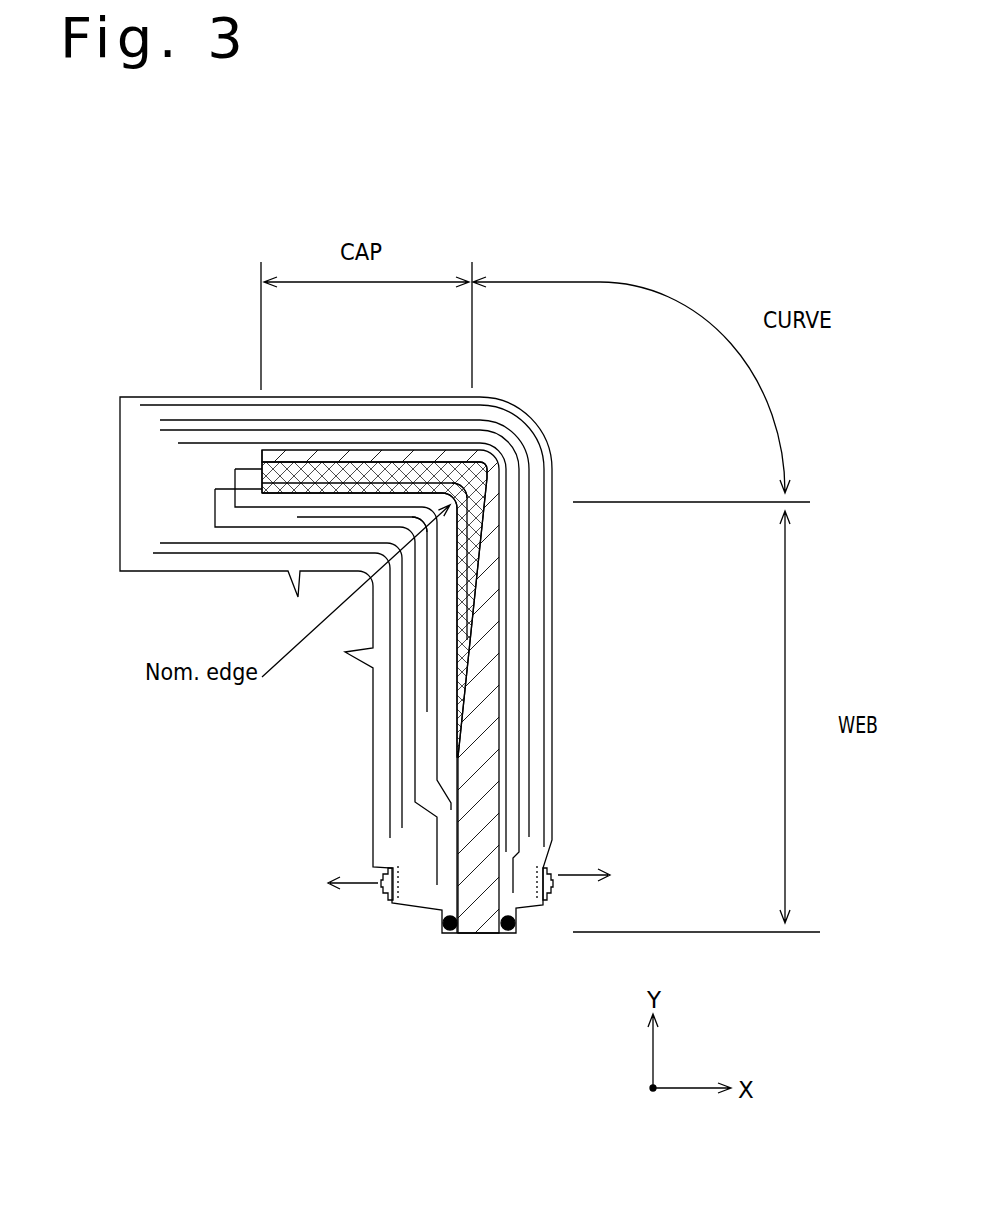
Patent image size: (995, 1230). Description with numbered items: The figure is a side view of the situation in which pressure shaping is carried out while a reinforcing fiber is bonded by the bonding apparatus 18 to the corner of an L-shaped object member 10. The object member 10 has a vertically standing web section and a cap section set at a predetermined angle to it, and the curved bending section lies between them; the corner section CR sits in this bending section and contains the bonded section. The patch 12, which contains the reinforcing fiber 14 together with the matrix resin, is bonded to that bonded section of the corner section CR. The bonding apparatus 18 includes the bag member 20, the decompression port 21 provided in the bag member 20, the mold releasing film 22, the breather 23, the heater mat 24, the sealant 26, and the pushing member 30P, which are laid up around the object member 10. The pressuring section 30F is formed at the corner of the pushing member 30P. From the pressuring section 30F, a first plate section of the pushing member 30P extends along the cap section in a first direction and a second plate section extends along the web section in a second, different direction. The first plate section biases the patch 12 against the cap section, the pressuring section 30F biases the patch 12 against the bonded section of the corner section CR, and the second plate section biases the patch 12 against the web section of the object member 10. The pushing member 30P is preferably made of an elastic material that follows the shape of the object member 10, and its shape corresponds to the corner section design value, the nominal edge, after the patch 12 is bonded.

The bonding apparatus 18 is at (183, 243).
The bag member 20 is at (373, 813).
The decompression port 21 is at (380, 867).
The mold releasing film 22 is at (235, 469).
The breather 23 is at (140, 405).
The heater mat 24 is at (160, 420).
The object member 10 is at (360, 453).
The patch 12 is at (292, 470).
The reinforcing fiber 14 is at (403, 478).
The sealant 26 is at (450, 935).
The pushing member 30P is at (416, 680).
The pressuring section 30F is at (416, 524).
The corner section CR is at (457, 482).